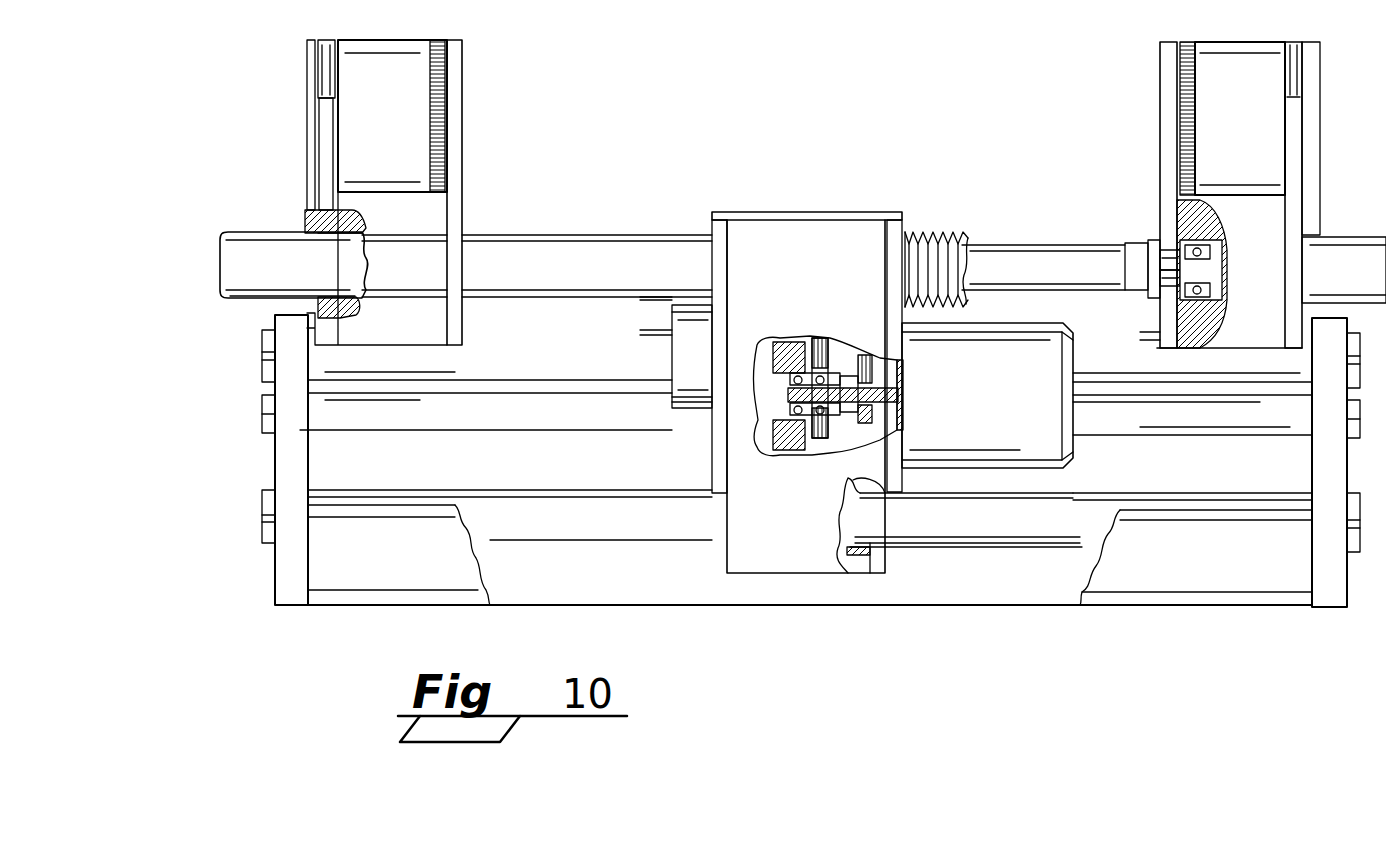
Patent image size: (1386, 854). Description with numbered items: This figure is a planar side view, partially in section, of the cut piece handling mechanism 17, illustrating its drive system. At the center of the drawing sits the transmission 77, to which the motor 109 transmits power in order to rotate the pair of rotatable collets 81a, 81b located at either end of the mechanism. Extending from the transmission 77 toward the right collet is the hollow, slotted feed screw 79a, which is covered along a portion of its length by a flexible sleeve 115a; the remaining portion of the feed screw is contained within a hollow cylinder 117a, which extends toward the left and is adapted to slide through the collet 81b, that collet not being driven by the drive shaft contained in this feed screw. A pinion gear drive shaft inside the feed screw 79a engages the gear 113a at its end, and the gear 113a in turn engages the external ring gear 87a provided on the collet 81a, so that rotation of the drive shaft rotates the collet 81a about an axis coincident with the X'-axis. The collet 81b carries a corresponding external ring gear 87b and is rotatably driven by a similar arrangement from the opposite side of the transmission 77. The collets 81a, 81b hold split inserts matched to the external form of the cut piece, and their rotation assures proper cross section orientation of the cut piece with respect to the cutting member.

The cut piece handling mechanism 17 is at (809, 116).
The rotatable collet 81b is at (408, 116).
The external ring gear 87b is at (436, 122).
The hollow cylinder 117a is at (582, 246).
The transmission 77 is at (848, 236).
The flexible sleeve 115a is at (945, 231).
The hollow slotted feed screw 79a is at (1014, 256).
The gear 113a is at (1172, 268).
The external ring gear 87a is at (1196, 148).
The rotatable collet 81a is at (1258, 116).
The motor 109 is at (992, 417).